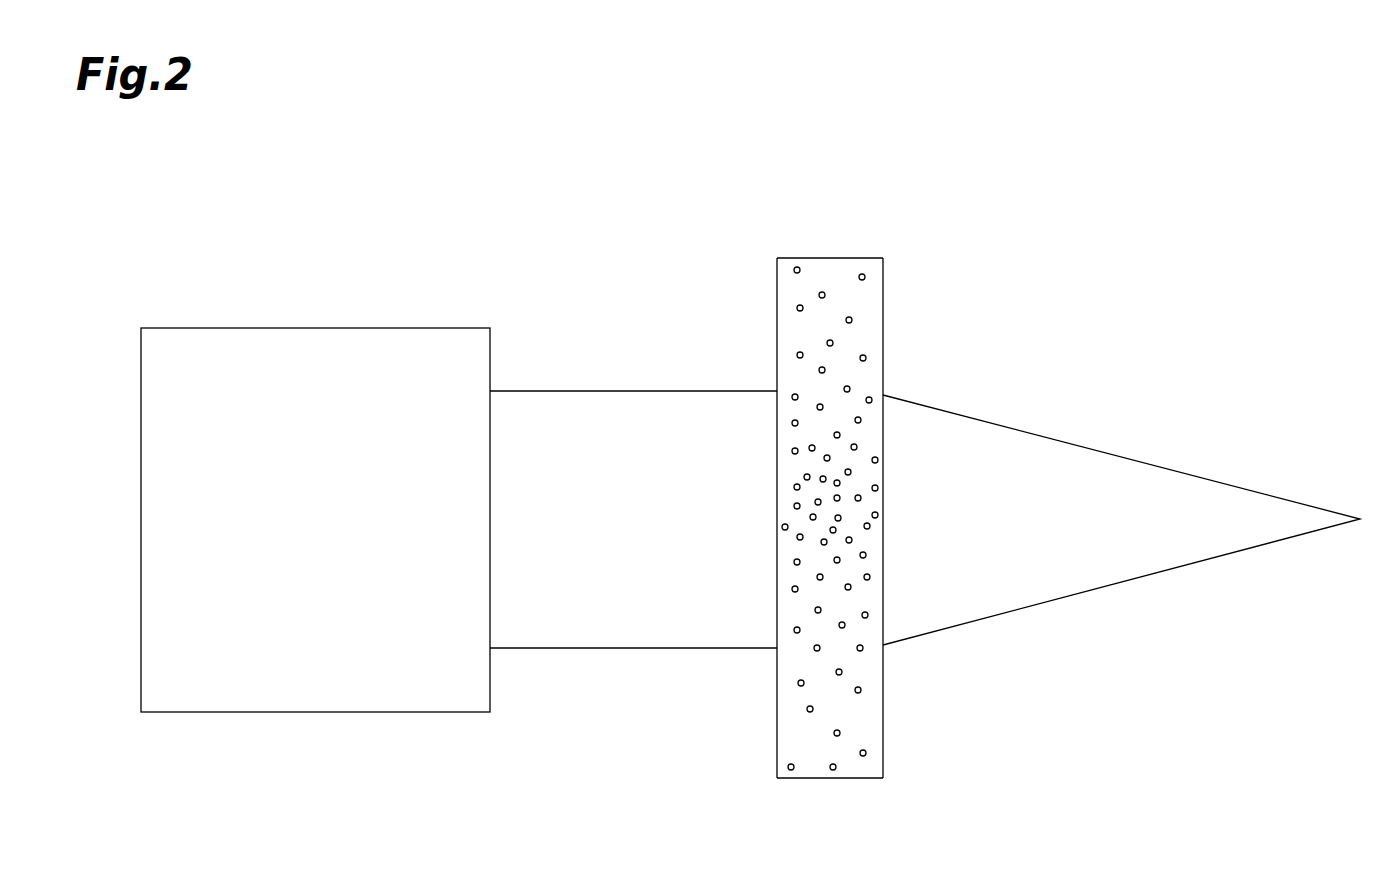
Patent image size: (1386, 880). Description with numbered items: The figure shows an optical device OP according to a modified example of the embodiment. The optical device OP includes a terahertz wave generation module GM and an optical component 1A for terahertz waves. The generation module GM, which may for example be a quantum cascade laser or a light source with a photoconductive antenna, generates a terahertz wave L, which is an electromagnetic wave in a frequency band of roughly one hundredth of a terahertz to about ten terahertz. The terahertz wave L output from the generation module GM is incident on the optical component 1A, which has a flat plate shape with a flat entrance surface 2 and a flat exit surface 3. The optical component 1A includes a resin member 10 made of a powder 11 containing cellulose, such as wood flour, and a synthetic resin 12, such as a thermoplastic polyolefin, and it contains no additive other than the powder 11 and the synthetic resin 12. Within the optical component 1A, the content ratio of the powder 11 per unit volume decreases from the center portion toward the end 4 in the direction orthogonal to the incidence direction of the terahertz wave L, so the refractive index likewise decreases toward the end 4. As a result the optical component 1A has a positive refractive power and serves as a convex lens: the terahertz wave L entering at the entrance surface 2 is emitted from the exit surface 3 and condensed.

The terahertz wave generation module GM is at (398, 327).
The terahertz wave L is at (553, 390).
The optical device OP is at (1010, 176).
The optical component 1A is at (852, 519).
The entrance surface 2 is at (777, 727).
The exit surface 3 is at (885, 727).
The end 4 is at (817, 258).
The resin member 10 is at (882, 518).
The powder 11 is at (937, 284).
The synthetic resin 12 is at (862, 297).